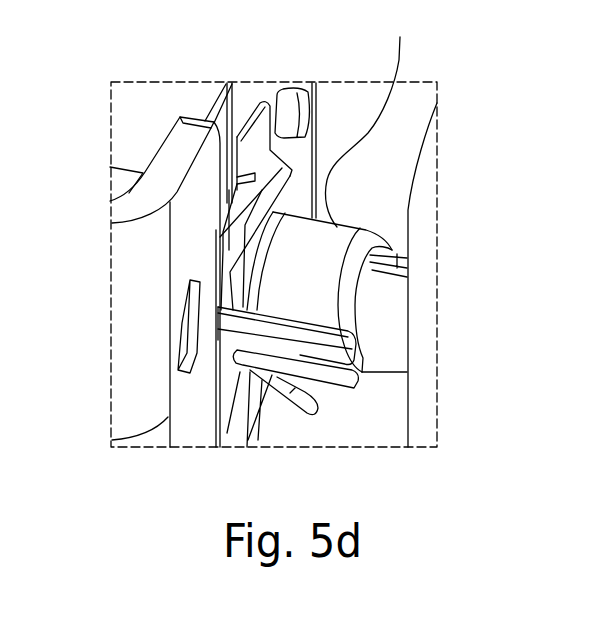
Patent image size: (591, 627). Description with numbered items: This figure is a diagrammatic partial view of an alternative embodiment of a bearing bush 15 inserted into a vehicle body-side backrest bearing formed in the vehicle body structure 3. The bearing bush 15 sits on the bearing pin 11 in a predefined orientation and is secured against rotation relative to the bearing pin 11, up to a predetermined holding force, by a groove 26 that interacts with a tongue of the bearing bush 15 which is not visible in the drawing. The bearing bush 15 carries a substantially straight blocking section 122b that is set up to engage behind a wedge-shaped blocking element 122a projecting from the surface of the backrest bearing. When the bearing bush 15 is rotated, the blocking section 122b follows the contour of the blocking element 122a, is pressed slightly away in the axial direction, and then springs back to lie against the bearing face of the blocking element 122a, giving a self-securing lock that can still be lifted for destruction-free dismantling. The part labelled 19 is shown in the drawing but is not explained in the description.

The vehicle body structure 3 is at (188, 440).
The bearing pin 11 is at (382, 342).
The bearing bush 15 is at (371, 119).
The fork arm 19 is at (290, 393).
The groove 26 is at (397, 260).
The blocking element 122a is at (178, 357).
The blocking section 122b is at (257, 116).